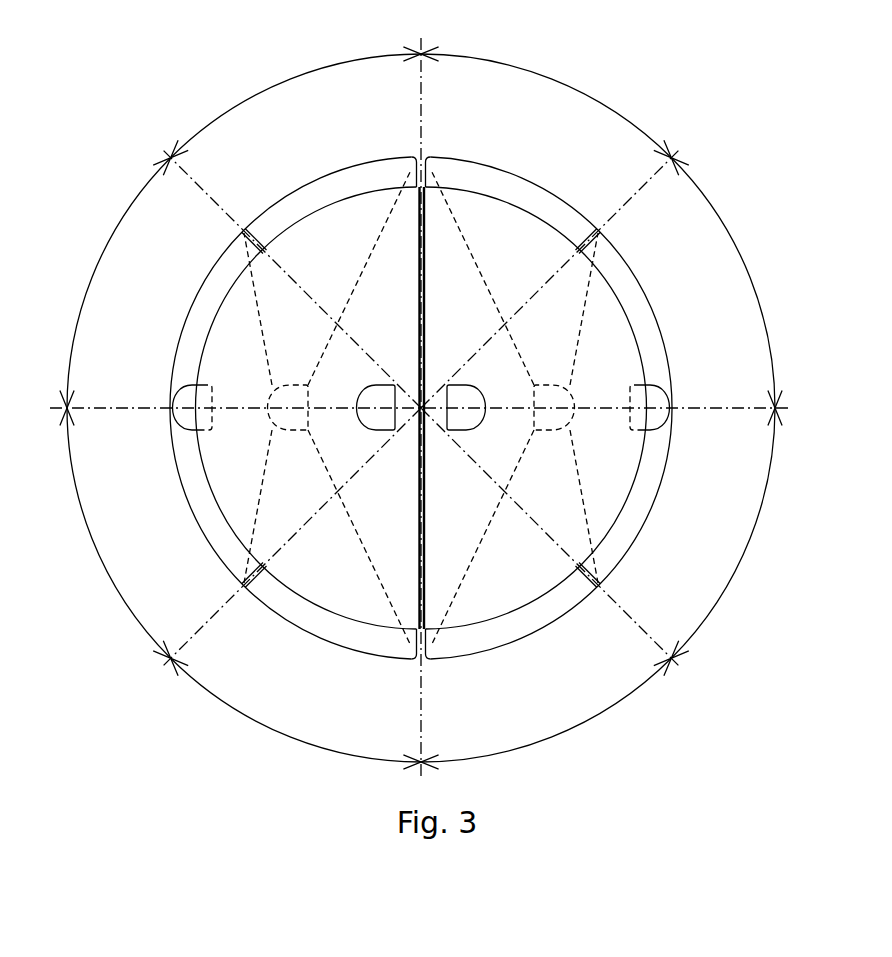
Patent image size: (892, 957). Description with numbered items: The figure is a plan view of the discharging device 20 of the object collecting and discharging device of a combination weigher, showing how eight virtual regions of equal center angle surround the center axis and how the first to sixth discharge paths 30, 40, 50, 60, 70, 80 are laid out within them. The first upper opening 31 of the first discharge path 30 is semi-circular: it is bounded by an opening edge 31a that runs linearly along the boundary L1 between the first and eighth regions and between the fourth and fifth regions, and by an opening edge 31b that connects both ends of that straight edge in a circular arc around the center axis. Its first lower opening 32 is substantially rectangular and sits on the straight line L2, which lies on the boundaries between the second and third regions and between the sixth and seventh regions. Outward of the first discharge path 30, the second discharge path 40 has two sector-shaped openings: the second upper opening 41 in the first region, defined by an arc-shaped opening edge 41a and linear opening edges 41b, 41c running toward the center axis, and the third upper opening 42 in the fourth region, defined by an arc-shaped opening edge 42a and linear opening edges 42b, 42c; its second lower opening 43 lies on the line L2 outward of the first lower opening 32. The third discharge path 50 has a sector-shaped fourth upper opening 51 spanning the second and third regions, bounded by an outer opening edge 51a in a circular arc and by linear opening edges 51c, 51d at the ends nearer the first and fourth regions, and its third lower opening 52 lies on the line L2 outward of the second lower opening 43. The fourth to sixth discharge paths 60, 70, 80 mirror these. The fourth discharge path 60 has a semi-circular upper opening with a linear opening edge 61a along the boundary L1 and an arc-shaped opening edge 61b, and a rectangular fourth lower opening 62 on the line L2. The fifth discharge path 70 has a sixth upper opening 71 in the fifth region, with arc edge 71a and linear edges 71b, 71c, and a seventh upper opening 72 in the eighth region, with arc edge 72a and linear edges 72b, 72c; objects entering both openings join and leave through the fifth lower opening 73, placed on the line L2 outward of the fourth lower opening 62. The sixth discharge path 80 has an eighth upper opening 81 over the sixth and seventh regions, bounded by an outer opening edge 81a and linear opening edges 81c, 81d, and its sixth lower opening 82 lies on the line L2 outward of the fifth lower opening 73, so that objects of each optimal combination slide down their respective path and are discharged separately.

The discharging device 20 is at (700, 59).
The first discharge path 30 is at (256, 420).
The first upper opening 31 is at (308, 457).
The opening edge 31a is at (415, 248).
The opening edge 31b is at (319, 213).
The first lower opening 32 is at (377, 393).
The second discharge path 40 is at (318, 420).
The second upper opening 41 is at (320, 173).
The opening edge 41a is at (307, 186).
The opening edge 41b is at (407, 168).
The opening edge 41c is at (254, 224).
The third upper opening 42 is at (318, 642).
The opening edge 42a is at (307, 622).
The opening edge 42b is at (255, 598).
The opening edge 42c is at (405, 652).
The second lower opening 43 is at (288, 385).
The third discharge path 50 is at (196, 408).
The fourth upper opening 51 is at (227, 408).
The outer opening edge 51a is at (194, 294).
The opening edge 51c is at (258, 257).
The opening edge 51d is at (258, 562).
The third lower opening 52 is at (187, 395).
The fourth discharge path 60 is at (587, 420).
The opening edge 61a is at (427, 248).
The opening edge 61b is at (523, 213).
The fourth lower opening 62 is at (465, 393).
The fifth discharge path 70 is at (526, 420).
The sixth upper opening 71 is at (526, 642).
The opening edge 71a is at (535, 622).
The opening edge 71b is at (437, 652).
The opening edge 71c is at (587, 598).
The seventh upper opening 72 is at (523, 173).
The opening edge 72a is at (535, 186).
The opening edge 72b is at (588, 224).
The opening edge 72c is at (435, 168).
The fifth lower opening 73 is at (554, 385).
The sixth discharge path 80 is at (646, 408).
The eighth upper opening 81 is at (616, 408).
The outer opening edge 81a is at (636, 512).
The opening edge 81c is at (584, 562).
The opening edge 81d is at (584, 257).
The sixth lower opening 82 is at (655, 395).
The boundary L1 is at (428, 46).
The straight line L2 is at (778, 414).